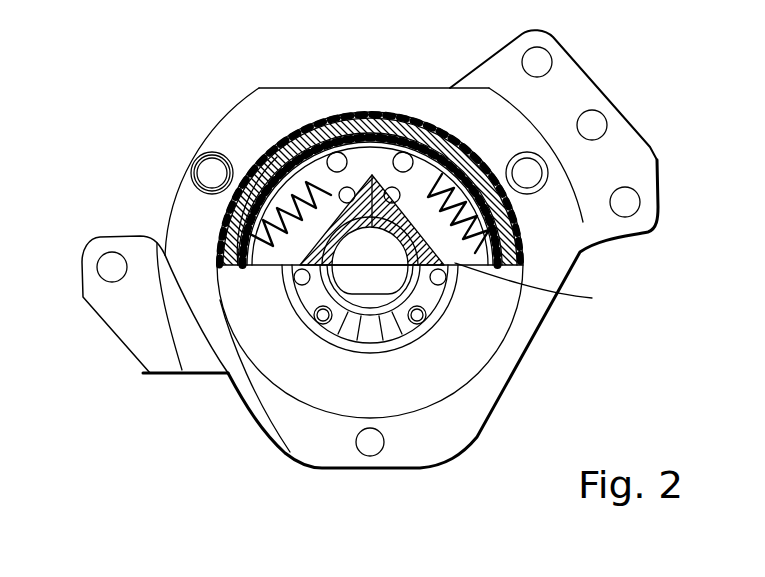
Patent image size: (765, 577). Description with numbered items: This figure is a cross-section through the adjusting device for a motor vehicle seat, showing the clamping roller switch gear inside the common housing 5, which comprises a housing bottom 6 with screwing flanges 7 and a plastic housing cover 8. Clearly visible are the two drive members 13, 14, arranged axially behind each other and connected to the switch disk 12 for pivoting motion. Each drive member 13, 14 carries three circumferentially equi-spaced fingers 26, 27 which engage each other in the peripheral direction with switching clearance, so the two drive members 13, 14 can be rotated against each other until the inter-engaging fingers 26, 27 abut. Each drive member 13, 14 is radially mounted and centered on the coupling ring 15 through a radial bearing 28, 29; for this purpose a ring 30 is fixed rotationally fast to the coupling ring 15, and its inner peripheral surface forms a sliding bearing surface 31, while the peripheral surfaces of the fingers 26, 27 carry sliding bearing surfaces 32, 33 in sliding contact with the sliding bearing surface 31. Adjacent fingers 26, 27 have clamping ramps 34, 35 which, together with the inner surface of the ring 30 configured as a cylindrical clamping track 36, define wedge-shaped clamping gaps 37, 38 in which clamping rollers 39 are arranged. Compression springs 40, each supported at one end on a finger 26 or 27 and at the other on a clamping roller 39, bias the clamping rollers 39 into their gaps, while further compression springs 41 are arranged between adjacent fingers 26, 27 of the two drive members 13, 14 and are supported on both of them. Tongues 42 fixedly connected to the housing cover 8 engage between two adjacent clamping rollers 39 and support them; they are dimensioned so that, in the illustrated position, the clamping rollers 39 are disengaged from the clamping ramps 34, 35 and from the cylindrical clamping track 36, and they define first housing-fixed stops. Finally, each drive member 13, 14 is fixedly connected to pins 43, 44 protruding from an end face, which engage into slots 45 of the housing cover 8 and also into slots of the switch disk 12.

The housing 5 is at (457, 363).
The housing bottom 6 is at (580, 93).
The screwing flanges 7 is at (640, 153).
The housing cover 8 is at (400, 250).
The switch disk 12 is at (370, 282).
The drive member 13 is at (296, 135).
The drive member 14 is at (557, 287).
The coupling ring 15 is at (182, 370).
The fingers 26 is at (376, 120).
The fingers 27 is at (592, 298).
The radial bearing 28 is at (300, 130).
The radial bearing 29 is at (350, 137).
The ring 30 is at (278, 157).
The sliding bearing surface 31 is at (358, 135).
The sliding bearing surface 32 is at (358, 135).
The sliding bearing surface 33 is at (480, 157).
The clamping ramp 34 is at (370, 153).
The clamping ramp 35 is at (370, 178).
The cylindrical clamping track 36 is at (193, 167).
The wedge-shaped clamping gap 37 is at (360, 150).
The wedge-shaped clamping gap 38 is at (460, 118).
The clamping rollers 39 is at (336, 152).
The compression springs 40 is at (512, 149).
The compression springs 41 is at (290, 223).
The tongues 42 is at (392, 128).
The pins 43 is at (292, 268).
The pins 44 is at (417, 318).
The slots 45 is at (343, 327).